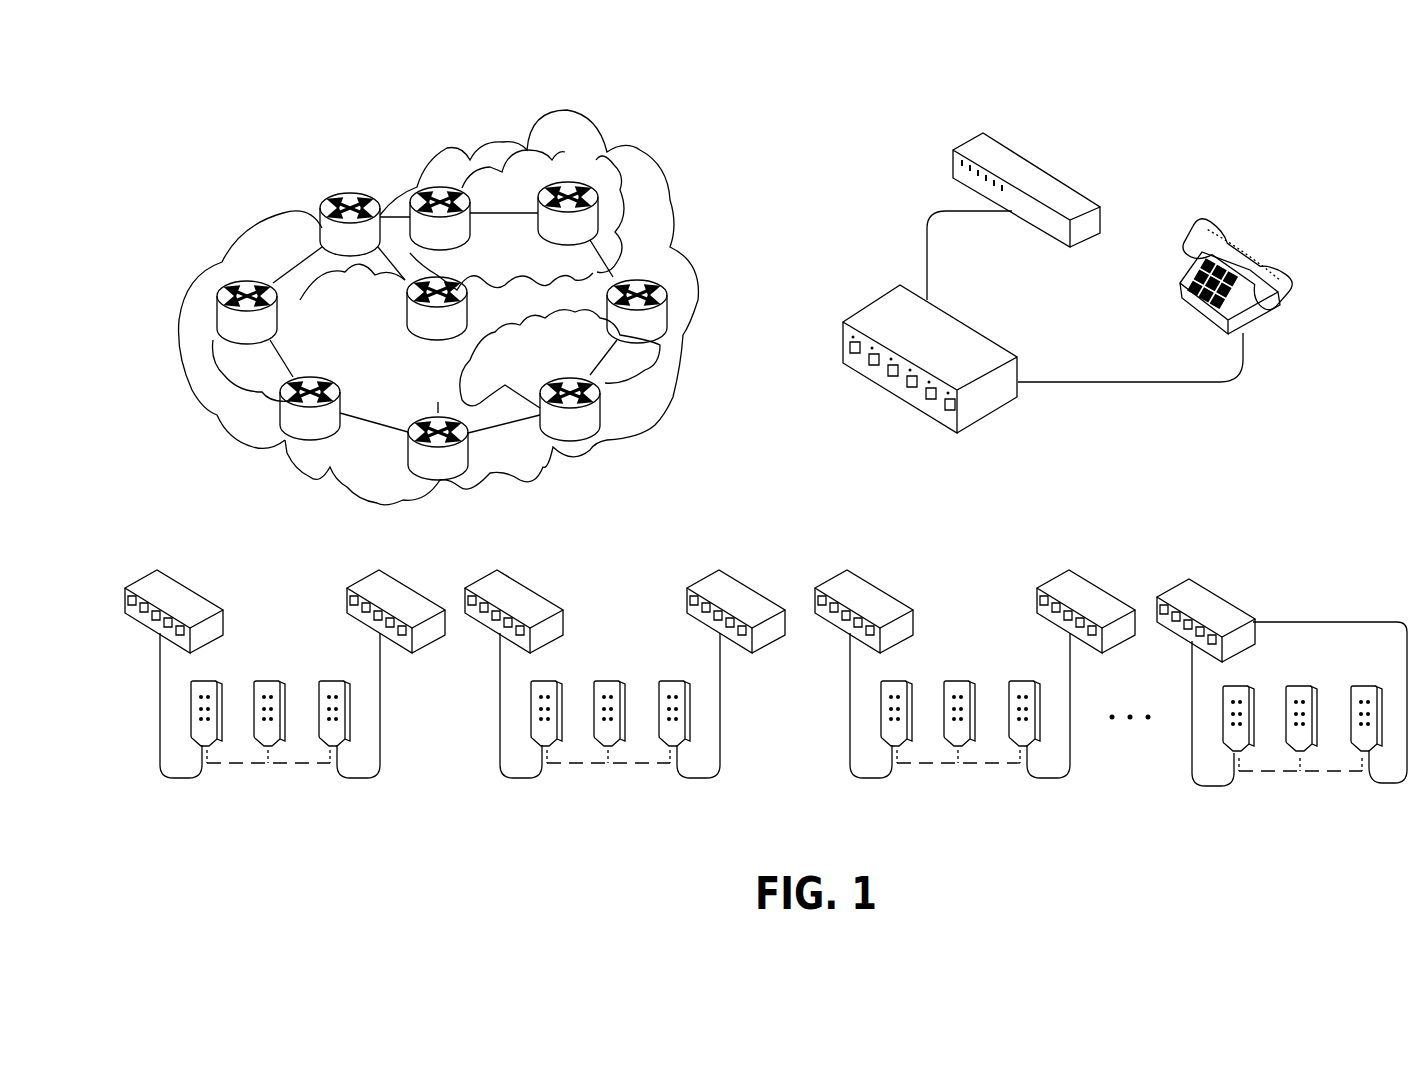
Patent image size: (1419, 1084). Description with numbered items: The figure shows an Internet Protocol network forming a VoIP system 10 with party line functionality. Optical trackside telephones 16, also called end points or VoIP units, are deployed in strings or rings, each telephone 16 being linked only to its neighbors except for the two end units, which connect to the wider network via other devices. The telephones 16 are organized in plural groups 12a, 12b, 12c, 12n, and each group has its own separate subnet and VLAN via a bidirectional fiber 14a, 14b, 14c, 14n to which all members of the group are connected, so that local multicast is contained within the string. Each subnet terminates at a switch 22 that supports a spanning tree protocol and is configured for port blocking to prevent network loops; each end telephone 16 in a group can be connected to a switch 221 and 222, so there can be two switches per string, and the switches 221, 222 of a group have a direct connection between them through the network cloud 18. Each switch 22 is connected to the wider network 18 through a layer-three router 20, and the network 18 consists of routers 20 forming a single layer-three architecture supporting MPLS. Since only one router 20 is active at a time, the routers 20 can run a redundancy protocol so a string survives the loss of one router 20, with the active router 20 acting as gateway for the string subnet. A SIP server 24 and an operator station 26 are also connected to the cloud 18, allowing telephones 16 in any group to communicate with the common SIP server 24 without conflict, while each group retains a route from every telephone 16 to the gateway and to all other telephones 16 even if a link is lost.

The VoIP system 10 is at (214, 155).
The group of telephones 12a is at (268, 810).
The group of telephones 12b is at (608, 810).
The group of telephones 12c is at (958, 811).
The group of telephones 12n is at (1300, 817).
The fiber 14a is at (158, 755).
The fiber 14b is at (498, 755).
The fiber 14c is at (848, 755).
The fiber 14n is at (1190, 763).
The telephone 16 is at (786, 689).
The network cloud 18 is at (667, 425).
The router 20 is at (322, 207).
The switch 22 is at (873, 302).
The first switch 221 is at (175, 577).
The second switch 222 is at (397, 577).
The SIP server 24 is at (1043, 167).
The operator station 26 is at (1253, 243).